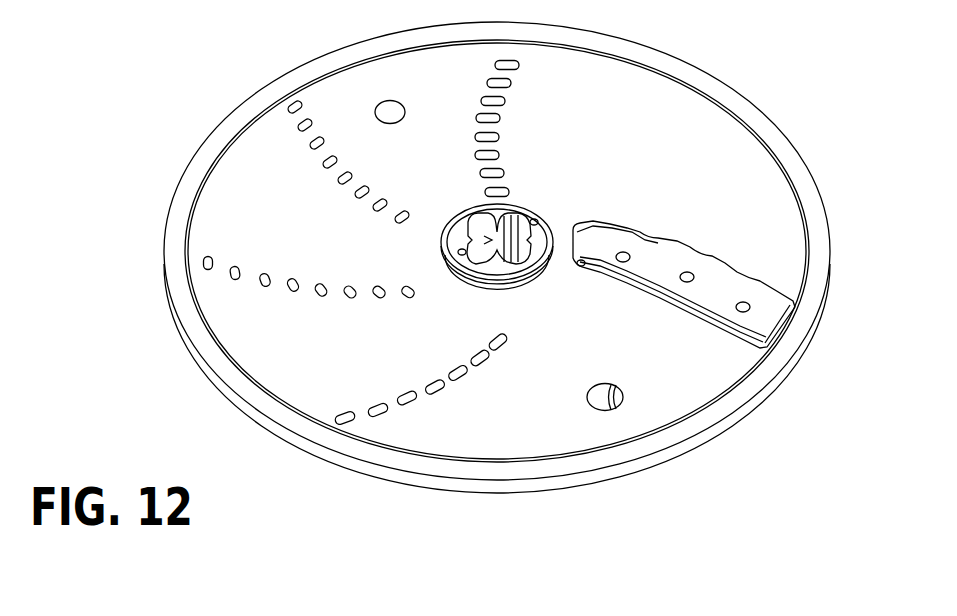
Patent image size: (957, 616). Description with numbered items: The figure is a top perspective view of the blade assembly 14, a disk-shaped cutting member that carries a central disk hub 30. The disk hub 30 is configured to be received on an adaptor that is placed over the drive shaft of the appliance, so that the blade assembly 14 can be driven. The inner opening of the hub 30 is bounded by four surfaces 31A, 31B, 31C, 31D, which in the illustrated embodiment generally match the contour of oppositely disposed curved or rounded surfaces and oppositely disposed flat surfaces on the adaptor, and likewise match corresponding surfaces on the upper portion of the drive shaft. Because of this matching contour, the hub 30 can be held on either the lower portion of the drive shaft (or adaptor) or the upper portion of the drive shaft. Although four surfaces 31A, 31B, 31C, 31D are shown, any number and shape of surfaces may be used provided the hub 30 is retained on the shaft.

The disk hub 30 is at (463, 257).
The surface of inner opening of hub 31A is at (383, 115).
The surface of inner opening of hub 31B is at (334, 398).
The surface of inner opening of hub 31C is at (513, 404).
The surface of inner opening of hub 31D is at (589, 106).
The blade assembly 14 is at (684, 190).